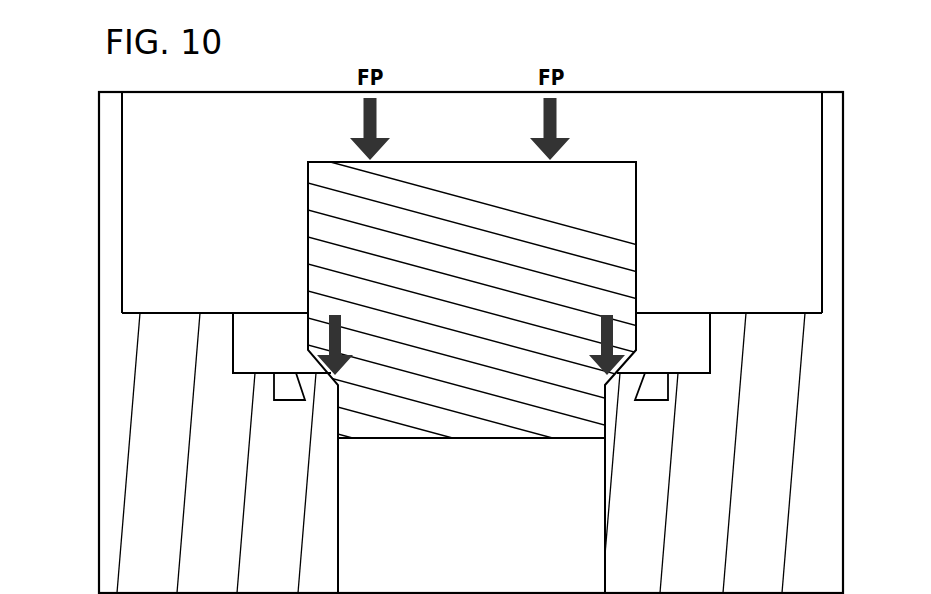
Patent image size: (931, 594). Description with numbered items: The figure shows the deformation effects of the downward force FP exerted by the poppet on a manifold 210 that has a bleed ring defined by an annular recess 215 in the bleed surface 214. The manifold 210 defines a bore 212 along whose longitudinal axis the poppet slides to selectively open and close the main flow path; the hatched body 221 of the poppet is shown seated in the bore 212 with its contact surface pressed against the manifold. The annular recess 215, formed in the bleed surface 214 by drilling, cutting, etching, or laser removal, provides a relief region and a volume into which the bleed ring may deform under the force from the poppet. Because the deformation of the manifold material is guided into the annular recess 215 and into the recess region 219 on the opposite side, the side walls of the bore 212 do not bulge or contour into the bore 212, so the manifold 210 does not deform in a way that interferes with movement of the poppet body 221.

The manifold 210 is at (437, 343).
The bore 212 is at (338, 477).
The bleed surface 214 is at (497, 315).
The annular recess 215 is at (288, 397).
The right notch / groove 219 is at (682, 407).
The body 221 is at (517, 332).